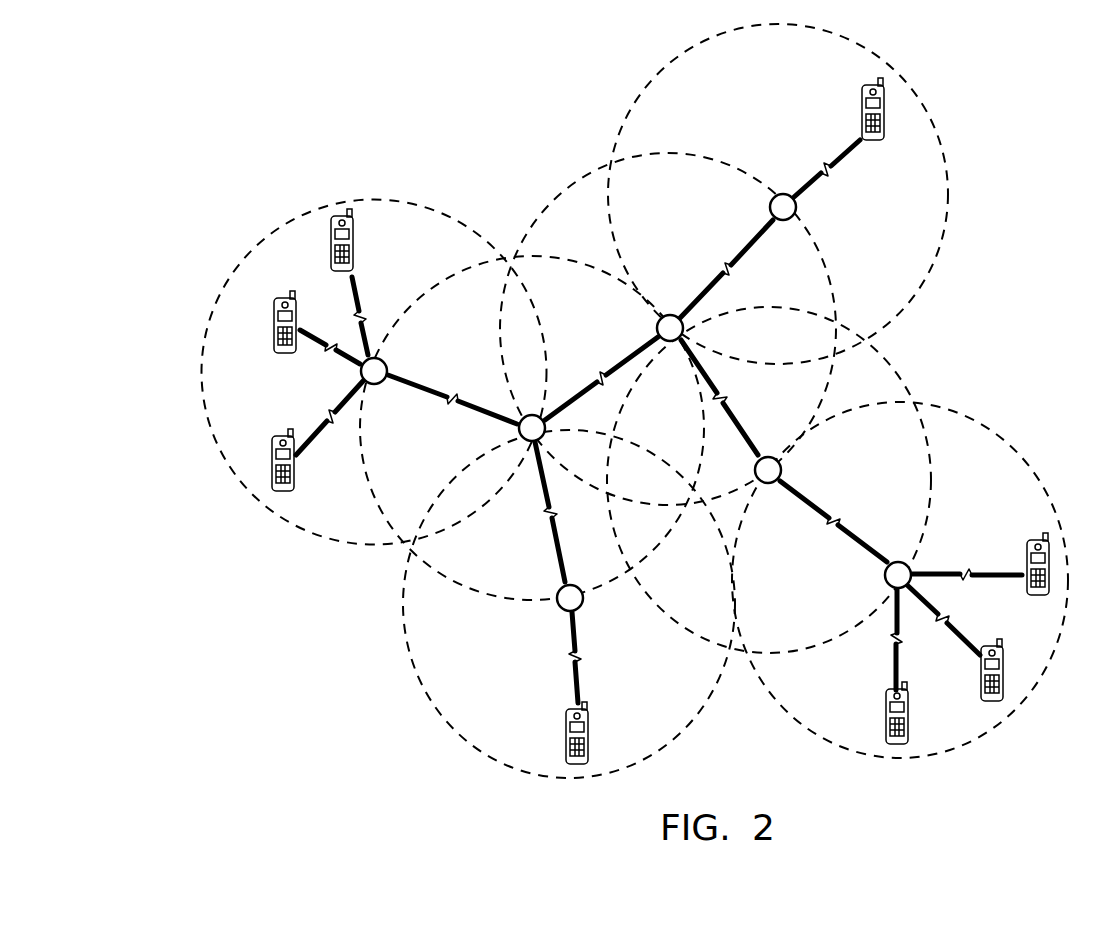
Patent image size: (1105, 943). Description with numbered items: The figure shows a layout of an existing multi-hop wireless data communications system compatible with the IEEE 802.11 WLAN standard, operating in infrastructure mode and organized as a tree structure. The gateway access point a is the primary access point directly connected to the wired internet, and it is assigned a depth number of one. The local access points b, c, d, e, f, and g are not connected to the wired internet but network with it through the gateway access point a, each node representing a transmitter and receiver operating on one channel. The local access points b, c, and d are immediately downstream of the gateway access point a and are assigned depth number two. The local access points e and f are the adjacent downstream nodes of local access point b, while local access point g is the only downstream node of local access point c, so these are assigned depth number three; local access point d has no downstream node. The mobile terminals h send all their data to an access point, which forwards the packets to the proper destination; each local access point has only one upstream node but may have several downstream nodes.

The gateway access point a is at (668, 312).
The local access point b is at (538, 413).
The local access point c is at (773, 454).
The local access point d is at (798, 211).
The local access point e is at (382, 342).
The local access point f is at (556, 616).
The local access point g is at (918, 562).
The mobile terminal h is at (893, 93).